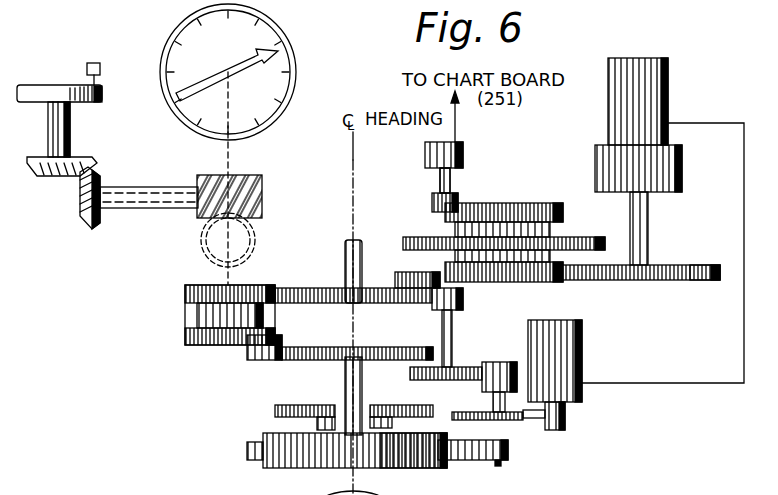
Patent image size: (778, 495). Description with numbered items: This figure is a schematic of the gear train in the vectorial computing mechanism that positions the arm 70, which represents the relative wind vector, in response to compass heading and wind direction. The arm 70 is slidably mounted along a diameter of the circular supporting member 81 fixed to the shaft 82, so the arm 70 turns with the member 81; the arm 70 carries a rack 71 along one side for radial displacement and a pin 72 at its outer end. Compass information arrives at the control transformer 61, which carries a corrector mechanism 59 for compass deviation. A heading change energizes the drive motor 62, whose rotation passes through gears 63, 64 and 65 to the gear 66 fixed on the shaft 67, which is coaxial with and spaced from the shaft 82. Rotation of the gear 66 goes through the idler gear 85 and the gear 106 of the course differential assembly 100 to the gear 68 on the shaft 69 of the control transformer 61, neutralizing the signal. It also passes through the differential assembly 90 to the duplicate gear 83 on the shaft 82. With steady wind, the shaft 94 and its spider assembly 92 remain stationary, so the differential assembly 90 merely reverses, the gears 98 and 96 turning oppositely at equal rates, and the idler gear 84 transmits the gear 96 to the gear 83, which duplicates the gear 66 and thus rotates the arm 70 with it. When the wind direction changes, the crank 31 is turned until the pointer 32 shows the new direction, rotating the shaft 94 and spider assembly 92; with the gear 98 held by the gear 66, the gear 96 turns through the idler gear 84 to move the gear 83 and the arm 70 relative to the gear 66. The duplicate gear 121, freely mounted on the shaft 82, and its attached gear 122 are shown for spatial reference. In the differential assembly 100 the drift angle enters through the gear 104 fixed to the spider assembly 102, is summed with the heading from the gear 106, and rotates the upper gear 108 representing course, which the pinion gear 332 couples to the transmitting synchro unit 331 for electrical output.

The crank 31 is at (66, 88).
The pointer 32 is at (282, 56).
The corrector mechanism 59 is at (660, 166).
The control transformer 61 is at (650, 84).
The drive motor 62 is at (565, 352).
The gear 63 is at (565, 419).
The gear 64 is at (497, 364).
The gear 65 is at (463, 305).
The gear 66 is at (328, 288).
The shaft 67 is at (357, 242).
The gear 68 is at (692, 276).
The shaft 69 is at (650, 248).
The arm 70 is at (250, 455).
The rack 71 is at (508, 448).
The pin 72 is at (500, 466).
The circular supporting member 81 is at (285, 441).
The shaft 82 is at (345, 383).
The duplicate gear 83 is at (395, 347).
The idler gear 84 is at (278, 341).
The idler gear 85 is at (413, 273).
The differential assembly 90 is at (194, 364).
The spider assembly 92 is at (205, 311).
The shaft 94 is at (232, 272).
The gear 96 is at (190, 334).
The gear 98 is at (188, 291).
The course differential assembly 100 is at (434, 220).
The spider assembly 102 is at (552, 236).
The gear 104 is at (640, 247).
The gear 106 is at (540, 276).
The upper gear 108 is at (490, 204).
The duplicate gear 121 is at (402, 405).
The gear 122 is at (392, 426).
The transmitting synchro unit 331 is at (425, 157).
The pinion gear 332 is at (458, 201).